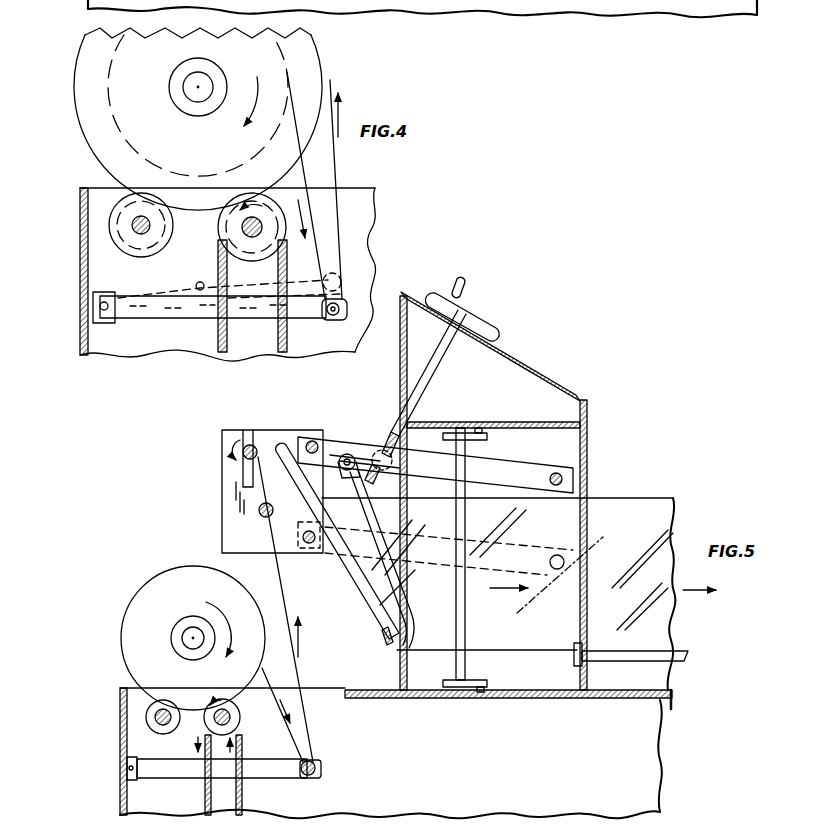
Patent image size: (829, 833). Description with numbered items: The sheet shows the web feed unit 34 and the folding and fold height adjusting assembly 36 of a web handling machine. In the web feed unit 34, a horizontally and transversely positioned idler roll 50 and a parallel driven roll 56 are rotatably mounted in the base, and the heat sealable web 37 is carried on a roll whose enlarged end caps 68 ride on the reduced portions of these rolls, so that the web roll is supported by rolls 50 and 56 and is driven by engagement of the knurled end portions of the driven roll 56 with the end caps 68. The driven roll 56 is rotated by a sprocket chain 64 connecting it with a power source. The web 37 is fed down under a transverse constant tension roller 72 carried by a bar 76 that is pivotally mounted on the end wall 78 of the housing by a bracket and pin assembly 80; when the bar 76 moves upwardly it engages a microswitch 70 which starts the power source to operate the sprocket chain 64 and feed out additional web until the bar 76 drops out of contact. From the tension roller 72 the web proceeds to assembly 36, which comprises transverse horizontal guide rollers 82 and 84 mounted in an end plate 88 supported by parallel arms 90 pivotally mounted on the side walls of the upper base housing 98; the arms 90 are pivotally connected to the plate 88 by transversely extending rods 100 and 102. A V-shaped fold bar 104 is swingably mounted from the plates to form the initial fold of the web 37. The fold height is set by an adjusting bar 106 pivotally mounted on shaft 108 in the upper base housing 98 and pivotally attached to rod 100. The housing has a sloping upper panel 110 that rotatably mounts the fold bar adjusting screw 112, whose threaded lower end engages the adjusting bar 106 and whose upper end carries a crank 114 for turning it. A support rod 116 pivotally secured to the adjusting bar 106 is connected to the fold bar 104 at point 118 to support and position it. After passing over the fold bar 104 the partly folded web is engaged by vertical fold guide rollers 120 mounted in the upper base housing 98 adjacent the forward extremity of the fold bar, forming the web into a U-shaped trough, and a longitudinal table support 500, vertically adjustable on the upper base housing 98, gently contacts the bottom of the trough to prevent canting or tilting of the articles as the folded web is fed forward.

In FIG. 4, the web feed unit 34 is at (76, 157).
In FIG. 5, the web feed unit 34 is at (140, 590).
In FIG. 5, the folding and fold height adjusting assembly 36 is at (282, 428).
In FIG. 4, the heat sealable web 37 is at (339, 171).
In FIG. 5, the heat sealable web 37 is at (314, 731).
In FIG. 4, the idler roll 50 is at (131, 225).
In FIG. 5, the idler roll 50 is at (147, 717).
In FIG. 4, the driven roll 56 is at (262, 248).
In FIG. 5, the driven roll 56 is at (240, 718).
In FIG. 4, the sprocket chain 64 is at (218, 335).
In FIG. 5, the sprocket chain 64 is at (243, 784).
In FIG. 4, the end caps 68 is at (80, 81).
In FIG. 5, the end caps 68 is at (125, 642).
In FIG. 4, the microswitch 70 is at (200, 284).
In FIG. 5, the constant tension roller 72 is at (321, 769).
In FIG. 4, the bar 76 is at (152, 318).
In FIG. 5, the bar 76 is at (173, 768).
In FIG. 4, the end wall 78 is at (80, 264).
In FIG. 4, the bracket and pin assemblies 80 is at (104, 292).
In FIG. 5, the bracket and pin assemblies 80 is at (130, 780).
In FIG. 5, the guide roller 82 is at (260, 516).
In FIG. 5, the guide roller 84 is at (249, 443).
In FIG. 5, the end plate 88 is at (222, 437).
In FIG. 5, the parallel arms 90 is at (518, 551).
In FIG. 5, the upper base housing 98 is at (579, 394).
In FIG. 5, the rod 100 is at (314, 441).
In FIG. 5, the rod 102 is at (310, 545).
In FIG. 5, the V-shaped fold bar 104 is at (370, 590).
In FIG. 5, the adjusting bar 106 is at (490, 470).
In FIG. 5, the shaft 108 is at (568, 479).
In FIG. 5, the sloping upper panel 110 is at (530, 372).
In FIG. 5, the fold bar adjusting screw 112 is at (436, 378).
In FIG. 5, the crank 114 is at (470, 321).
In FIG. 5, the support rod 116 is at (368, 510).
In FIG. 5, the connection point 118 is at (382, 642).
In FIG. 5, the vertical fold guide rollers 120 is at (462, 620).
In FIG. 5, the table support 500 is at (678, 660).